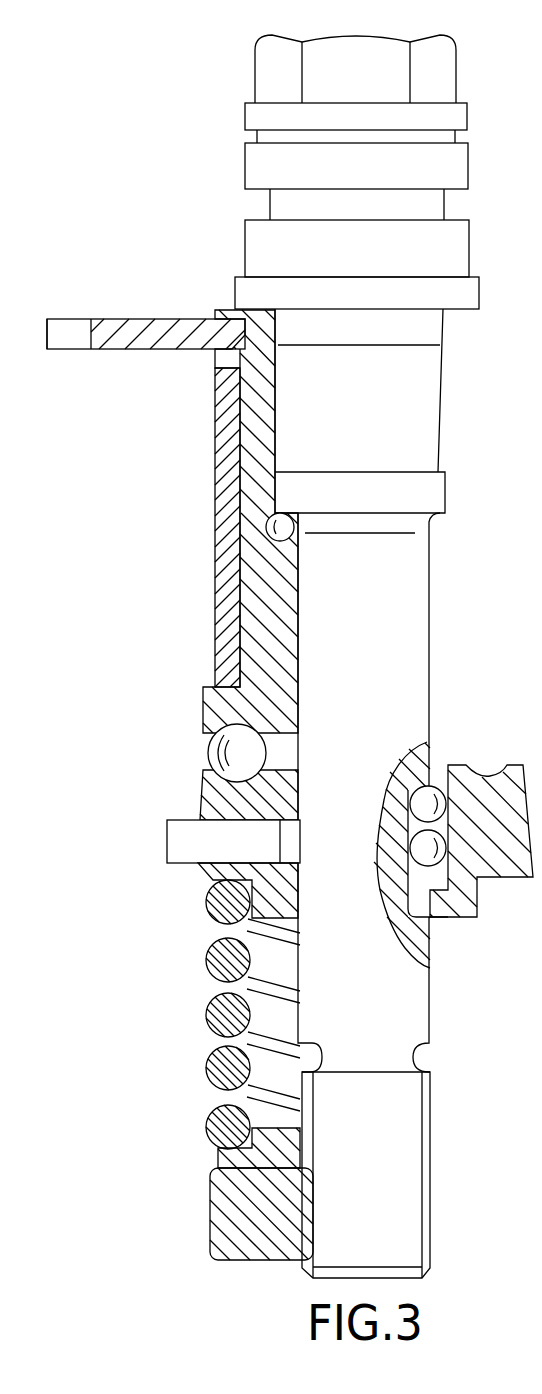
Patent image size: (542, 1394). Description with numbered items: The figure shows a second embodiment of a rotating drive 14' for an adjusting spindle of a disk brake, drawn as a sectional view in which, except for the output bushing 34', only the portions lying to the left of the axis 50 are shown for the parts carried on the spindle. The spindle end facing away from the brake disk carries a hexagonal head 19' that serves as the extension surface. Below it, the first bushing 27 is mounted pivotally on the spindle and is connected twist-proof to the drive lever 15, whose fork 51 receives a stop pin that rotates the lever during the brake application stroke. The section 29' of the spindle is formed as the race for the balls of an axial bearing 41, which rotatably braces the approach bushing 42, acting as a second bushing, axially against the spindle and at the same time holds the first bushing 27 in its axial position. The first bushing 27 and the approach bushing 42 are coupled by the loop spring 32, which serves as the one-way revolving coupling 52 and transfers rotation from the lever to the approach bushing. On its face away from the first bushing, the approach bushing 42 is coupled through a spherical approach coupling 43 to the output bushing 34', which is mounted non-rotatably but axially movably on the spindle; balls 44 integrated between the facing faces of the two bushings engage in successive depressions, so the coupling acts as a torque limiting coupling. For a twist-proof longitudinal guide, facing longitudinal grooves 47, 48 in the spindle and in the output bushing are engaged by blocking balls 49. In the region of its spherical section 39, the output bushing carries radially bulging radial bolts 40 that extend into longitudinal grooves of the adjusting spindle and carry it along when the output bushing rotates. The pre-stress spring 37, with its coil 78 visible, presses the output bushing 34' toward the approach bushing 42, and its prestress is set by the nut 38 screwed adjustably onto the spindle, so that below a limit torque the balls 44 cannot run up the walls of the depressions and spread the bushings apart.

The rotating drive 14' is at (329, 169).
The hexagonal head 19' is at (337, 66).
The drive lever 15 is at (124, 328).
The fork 51 is at (62, 328).
The first bushing 27 is at (245, 388).
The one-way revolving coupling 52 is at (192, 451).
The loop spring 32 is at (230, 487).
The axial bearing 41 is at (243, 565).
The approach bushing 42 is at (250, 608).
The spherical approach coupling 43 is at (188, 728).
The balls 44 is at (230, 753).
The output bushing 34' is at (218, 795).
The radial bolts 40 is at (182, 853).
The spherical section 39 is at (200, 873).
The pre-stress spring 37 is at (222, 965).
The spring coil 78 is at (310, 1015).
The nut 38 is at (228, 1220).
The axis 50 is at (362, 382).
The section of the spindle 29' is at (398, 895).
The longitudinal groove 47 is at (413, 905).
The longitudinal groove 48 is at (440, 882).
The blocking balls 49 is at (428, 800).